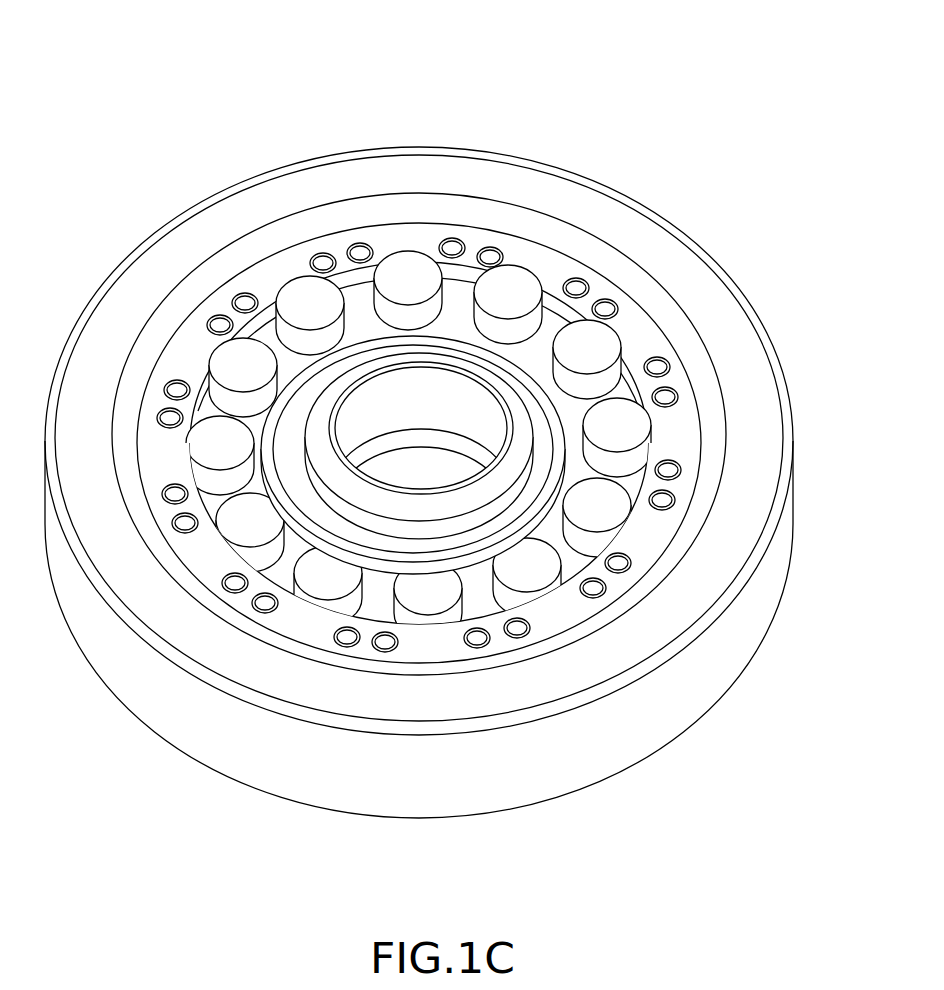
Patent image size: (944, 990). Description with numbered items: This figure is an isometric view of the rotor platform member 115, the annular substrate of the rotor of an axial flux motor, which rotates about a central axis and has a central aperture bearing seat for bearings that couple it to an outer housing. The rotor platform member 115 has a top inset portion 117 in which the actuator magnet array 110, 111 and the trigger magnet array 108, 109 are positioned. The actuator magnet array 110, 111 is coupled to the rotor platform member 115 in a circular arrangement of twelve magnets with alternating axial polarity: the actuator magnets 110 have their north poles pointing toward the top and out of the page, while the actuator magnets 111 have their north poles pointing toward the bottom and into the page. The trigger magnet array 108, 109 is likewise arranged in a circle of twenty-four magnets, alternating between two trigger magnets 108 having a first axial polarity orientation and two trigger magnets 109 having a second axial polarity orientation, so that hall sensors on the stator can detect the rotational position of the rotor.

The rotor platform member 115 is at (166, 101).
The top inset portion 117 is at (195, 350).
The trigger magnets having a second axial polarity orientation 109 is at (170, 418).
The trigger magnets having a first axial polarity orientation 108 is at (173, 495).
The actuator magnets 110 is at (418, 445).
The actuator magnets 111 is at (420, 445).